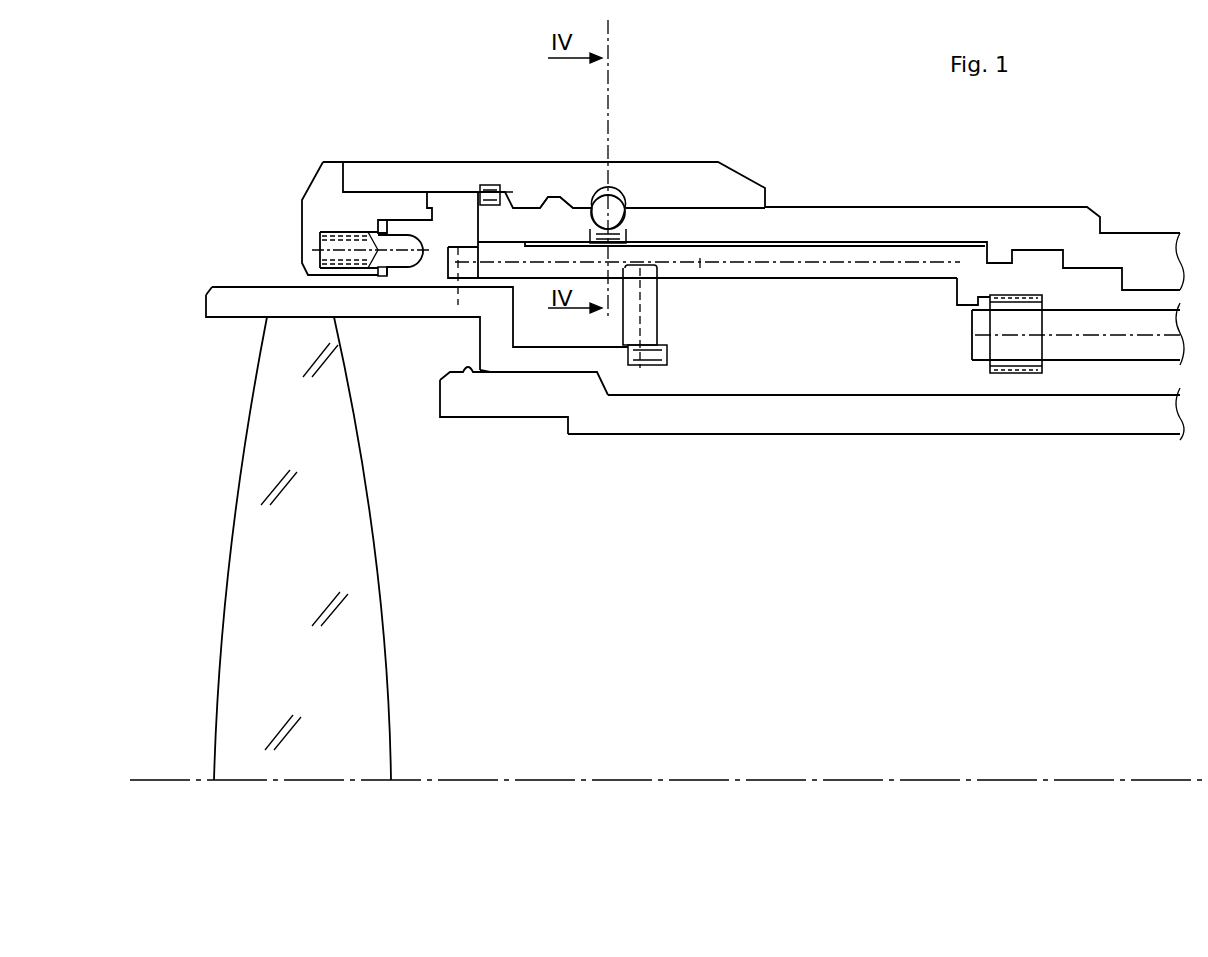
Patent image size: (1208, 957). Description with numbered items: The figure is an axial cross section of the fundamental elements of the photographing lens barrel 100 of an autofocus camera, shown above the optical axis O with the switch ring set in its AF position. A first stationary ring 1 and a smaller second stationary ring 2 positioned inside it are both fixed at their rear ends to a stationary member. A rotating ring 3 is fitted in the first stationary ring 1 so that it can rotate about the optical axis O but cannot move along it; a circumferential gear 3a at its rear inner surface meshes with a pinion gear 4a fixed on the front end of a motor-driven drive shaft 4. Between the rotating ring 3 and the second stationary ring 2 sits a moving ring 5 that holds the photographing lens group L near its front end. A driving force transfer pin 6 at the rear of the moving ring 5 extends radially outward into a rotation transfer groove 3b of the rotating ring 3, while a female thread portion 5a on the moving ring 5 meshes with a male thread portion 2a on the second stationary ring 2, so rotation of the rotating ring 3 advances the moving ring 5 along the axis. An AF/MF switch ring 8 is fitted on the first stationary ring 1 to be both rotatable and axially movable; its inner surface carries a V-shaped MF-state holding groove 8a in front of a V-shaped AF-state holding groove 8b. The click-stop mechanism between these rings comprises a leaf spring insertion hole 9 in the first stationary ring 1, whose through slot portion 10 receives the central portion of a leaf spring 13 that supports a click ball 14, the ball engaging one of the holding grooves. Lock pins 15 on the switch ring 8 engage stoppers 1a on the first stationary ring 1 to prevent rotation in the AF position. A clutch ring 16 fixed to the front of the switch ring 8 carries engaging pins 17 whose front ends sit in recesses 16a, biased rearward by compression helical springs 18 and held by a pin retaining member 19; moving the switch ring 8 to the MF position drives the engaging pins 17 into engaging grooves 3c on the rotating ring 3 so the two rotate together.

The photographing lens barrel 100 is at (1106, 146).
The first stationary ring 1 is at (884, 215).
The stoppers 1a is at (477, 217).
The second stationary ring 2 is at (814, 432).
The male thread portion 2a is at (474, 376).
The rotating ring 3 is at (822, 262).
The circumferential gear 3a is at (958, 298).
The rotation transfer groove 3b is at (700, 263).
The engaging grooves 3c is at (458, 305).
The drive shaft 4 is at (1147, 345).
The pinion gear 4a is at (1018, 372).
The moving ring 5 is at (232, 296).
The female thread portion 5a is at (530, 374).
The driving force transfer pin 6 is at (652, 330).
The AF/MF switch ring 8 is at (724, 178).
The MF-state holding groove 8a is at (545, 200).
The AF-state holding groove 8b is at (645, 204).
The leaf spring insertion hole 9 is at (583, 159).
The through slot portion 10 is at (600, 204).
The leaf spring 13 is at (630, 241).
The click ball 14 is at (616, 200).
The pins 15 is at (490, 190).
The clutch ring 16 is at (301, 194).
The recesses 16a is at (322, 235).
The engaging pins 17 is at (397, 245).
The compression helical springs 18 is at (350, 268).
The pin retaining member 19 is at (382, 272).
The photographing lens group L is at (358, 624).
The optical axis O is at (632, 775).